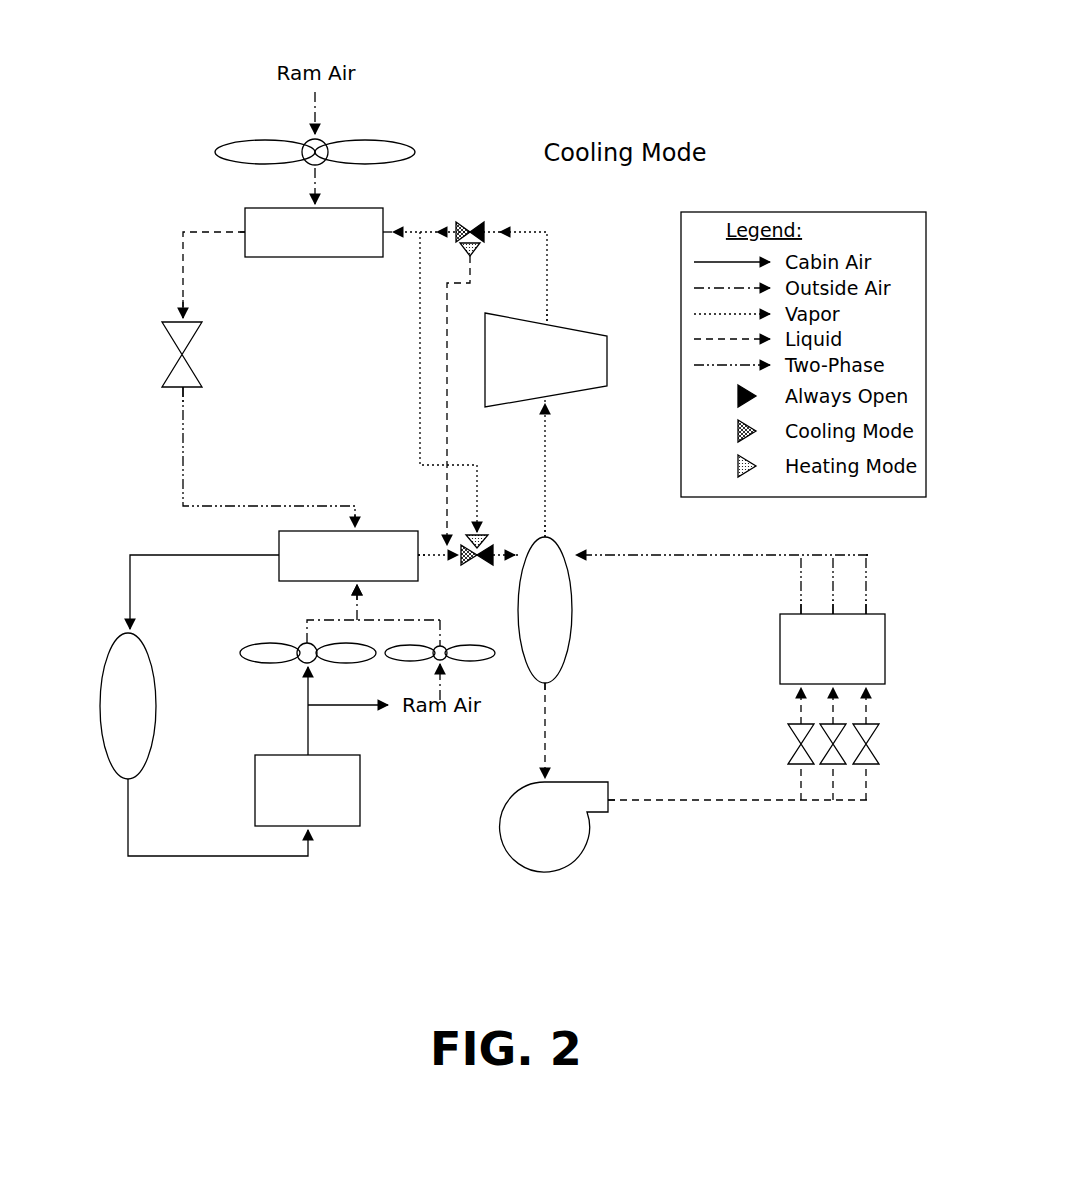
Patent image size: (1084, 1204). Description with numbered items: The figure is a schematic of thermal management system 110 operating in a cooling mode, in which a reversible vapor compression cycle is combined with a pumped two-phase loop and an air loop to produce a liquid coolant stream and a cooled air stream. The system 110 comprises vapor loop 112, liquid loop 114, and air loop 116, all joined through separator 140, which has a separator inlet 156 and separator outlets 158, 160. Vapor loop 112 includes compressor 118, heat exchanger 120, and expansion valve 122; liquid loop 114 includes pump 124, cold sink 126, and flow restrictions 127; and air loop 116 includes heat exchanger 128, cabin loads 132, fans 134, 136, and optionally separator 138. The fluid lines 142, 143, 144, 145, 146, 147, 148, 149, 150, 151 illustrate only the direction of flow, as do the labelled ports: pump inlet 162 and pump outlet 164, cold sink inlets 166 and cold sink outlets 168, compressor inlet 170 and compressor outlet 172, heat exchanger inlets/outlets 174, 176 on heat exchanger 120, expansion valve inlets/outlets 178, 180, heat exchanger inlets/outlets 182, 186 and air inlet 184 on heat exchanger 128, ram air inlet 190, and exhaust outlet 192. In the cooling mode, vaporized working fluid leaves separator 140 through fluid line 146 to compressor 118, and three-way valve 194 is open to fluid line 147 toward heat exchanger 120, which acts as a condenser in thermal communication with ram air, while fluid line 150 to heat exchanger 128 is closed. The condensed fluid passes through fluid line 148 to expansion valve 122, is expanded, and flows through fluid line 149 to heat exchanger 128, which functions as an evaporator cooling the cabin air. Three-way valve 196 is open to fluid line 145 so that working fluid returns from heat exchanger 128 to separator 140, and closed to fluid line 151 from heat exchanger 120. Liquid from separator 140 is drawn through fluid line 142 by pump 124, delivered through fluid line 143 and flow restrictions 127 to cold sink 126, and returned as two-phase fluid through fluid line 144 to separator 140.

The system 110 is at (741, 72).
The vapor loop 112 is at (150, 160).
The liquid loop 114 is at (822, 865).
The air loop 116 is at (122, 888).
The compressor 118 is at (608, 372).
The heat exchanger 120 is at (300, 258).
The expansion valve 122 is at (164, 334).
The pump 124 is at (500, 830).
The cold sink 126 is at (886, 660).
The flow restrictions 127 is at (879, 752).
The heat exchanger 128 is at (373, 531).
The cabin loads 132 is at (255, 798).
The fan 134 is at (450, 648).
The fan 136 is at (266, 647).
The separator 138 is at (100, 712).
The separator 140 is at (571, 648).
The fluid line 142 is at (543, 751).
The fluid line 143 is at (712, 801).
The fluid line 144 is at (810, 553).
The fluid line 145 is at (508, 553).
The fluid line 146 is at (548, 462).
The fluid line 147 is at (549, 265).
The fluid line 148 is at (182, 276).
The fluid line 149 is at (218, 505).
The fluid line 150 is at (448, 372).
The fluid line 151 is at (419, 386).
The separator inlet 156 is at (521, 557).
The separator outlet 158 is at (548, 539).
The separator outlet 160 is at (548, 683).
The pump inlet 162 is at (548, 781).
The pump outlet 164 is at (609, 790).
The cold sink inlets 166 is at (876, 686).
The cold sink outlets 168 is at (872, 614).
The compressor inlet 170 is at (545, 462).
The compressor outlet 172 is at (549, 323).
The heat exchanger inlet/outlet 174 is at (386, 230).
The heat exchanger inlet/outlet 176 is at (244, 228).
The expansion valve inlet/outlet 178 is at (176, 315).
The expansion valve inlet/outlet 180 is at (184, 388).
The heat exchanger inlet/outlet 182 is at (353, 528).
The air inlet 184 is at (348, 586).
The heat exchanger inlet/outlet 186 is at (421, 558).
The ram air inlet 190 is at (452, 722).
The exhaust outlet 192 is at (330, 704).
The valve 194 is at (469, 222).
The valve 196 is at (488, 538).